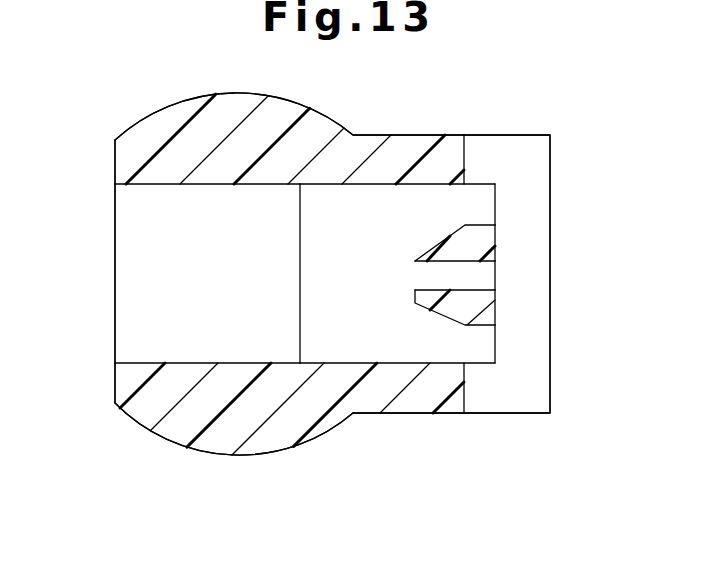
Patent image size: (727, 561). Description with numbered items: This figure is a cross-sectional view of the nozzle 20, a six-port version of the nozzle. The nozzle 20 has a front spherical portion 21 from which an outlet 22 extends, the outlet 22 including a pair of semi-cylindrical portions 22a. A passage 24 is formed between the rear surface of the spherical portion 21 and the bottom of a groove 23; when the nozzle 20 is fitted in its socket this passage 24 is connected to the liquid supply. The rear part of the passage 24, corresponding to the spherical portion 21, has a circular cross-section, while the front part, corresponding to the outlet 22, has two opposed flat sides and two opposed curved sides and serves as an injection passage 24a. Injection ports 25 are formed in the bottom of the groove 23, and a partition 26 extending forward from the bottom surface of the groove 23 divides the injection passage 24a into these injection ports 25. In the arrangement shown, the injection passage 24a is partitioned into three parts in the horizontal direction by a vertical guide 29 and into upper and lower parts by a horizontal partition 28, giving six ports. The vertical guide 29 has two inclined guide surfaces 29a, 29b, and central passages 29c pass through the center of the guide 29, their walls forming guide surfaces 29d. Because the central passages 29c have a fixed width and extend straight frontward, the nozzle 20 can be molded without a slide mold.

The nozzle 20 is at (306, 102).
The spherical portion 21 is at (158, 113).
The outlet 22 is at (409, 407).
The semi-cylindrical portions 22a is at (543, 358).
The groove 23 is at (472, 407).
The passage 24 is at (136, 363).
The injection passage 24a is at (423, 187).
The injection ports 25 is at (462, 187).
The partition 26 is at (497, 266).
The horizontal partition 28 is at (487, 207).
The vertical guide 29 is at (476, 279).
The inclined guide surface 29a is at (435, 247).
The inclined guide surface 29b is at (447, 316).
The central passages 29c is at (477, 264).
The guide surfaces 29d is at (440, 268).